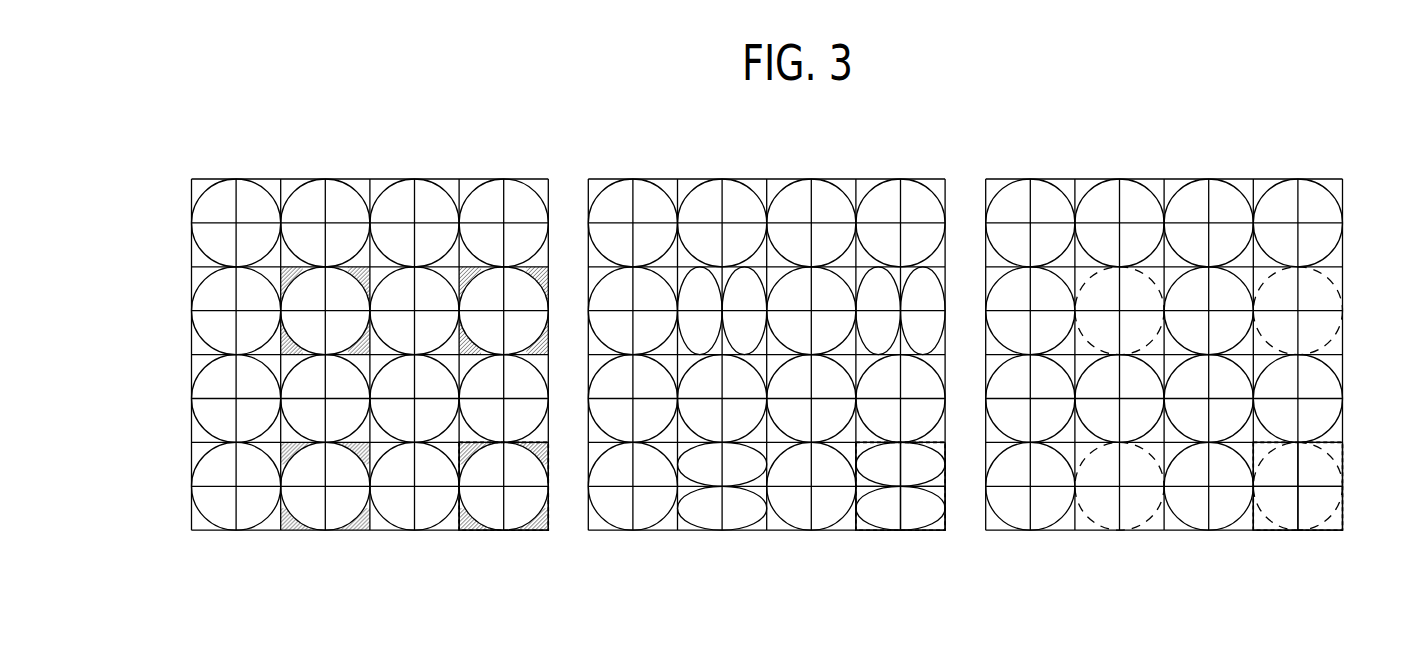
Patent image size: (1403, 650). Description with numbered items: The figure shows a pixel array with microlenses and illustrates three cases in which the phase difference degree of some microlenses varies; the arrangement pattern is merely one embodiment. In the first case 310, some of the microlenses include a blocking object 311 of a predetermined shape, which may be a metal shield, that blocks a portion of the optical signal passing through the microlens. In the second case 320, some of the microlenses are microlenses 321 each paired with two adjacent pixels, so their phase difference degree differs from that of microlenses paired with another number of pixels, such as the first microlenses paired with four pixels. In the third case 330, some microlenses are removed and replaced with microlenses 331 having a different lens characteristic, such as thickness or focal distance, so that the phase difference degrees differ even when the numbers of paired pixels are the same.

The case where microlenses include a blocking object 310 is at (388, 360).
The blocking object 311 is at (548, 515).
The case where microlenses are paired with adjacent two pixels 320 is at (784, 363).
The microlenses paired with two pixels 321 is at (946, 527).
The case where microlenses have different lens characteristics 330 is at (1182, 363).
The microlenses having a different lens characteristic 331 is at (1342, 525).